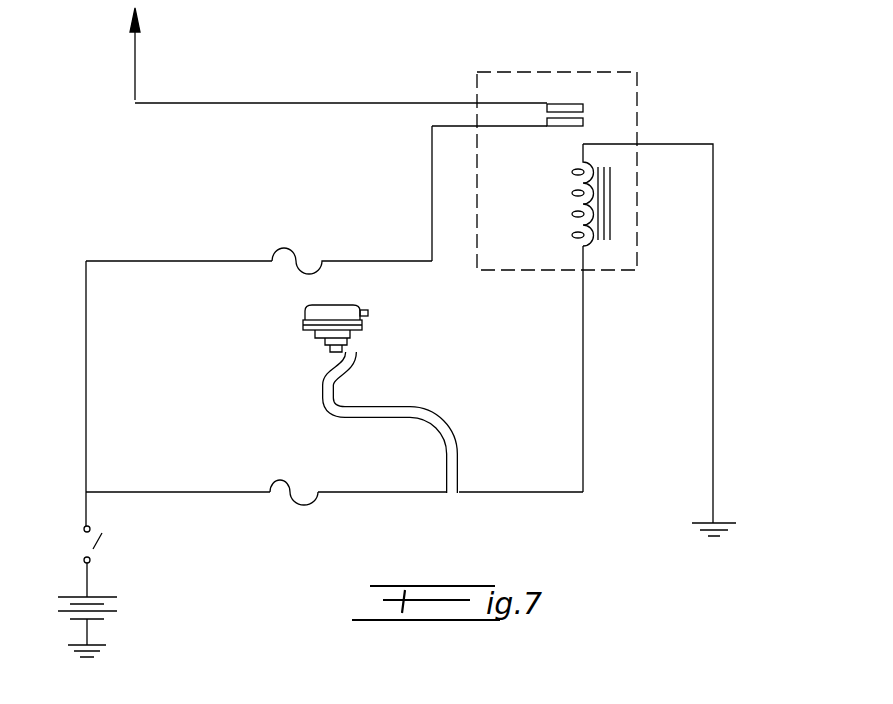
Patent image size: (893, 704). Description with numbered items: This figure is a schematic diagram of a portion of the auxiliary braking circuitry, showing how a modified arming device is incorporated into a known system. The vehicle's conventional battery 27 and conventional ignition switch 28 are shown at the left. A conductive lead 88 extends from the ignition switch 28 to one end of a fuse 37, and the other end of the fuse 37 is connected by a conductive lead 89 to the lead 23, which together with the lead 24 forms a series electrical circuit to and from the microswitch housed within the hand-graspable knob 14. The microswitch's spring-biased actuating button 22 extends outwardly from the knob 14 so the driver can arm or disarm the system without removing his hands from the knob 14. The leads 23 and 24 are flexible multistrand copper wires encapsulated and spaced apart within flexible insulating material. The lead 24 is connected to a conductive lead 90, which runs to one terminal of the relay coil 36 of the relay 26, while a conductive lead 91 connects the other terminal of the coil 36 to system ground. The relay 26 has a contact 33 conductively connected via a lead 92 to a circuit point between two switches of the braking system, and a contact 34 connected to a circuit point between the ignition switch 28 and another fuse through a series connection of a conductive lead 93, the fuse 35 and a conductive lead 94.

The hand-graspable knob 14 is at (305, 308).
The spring-biased actuating button 22 is at (368, 313).
The lead 23 is at (323, 402).
The lead 24 is at (334, 392).
The relay 26 is at (513, 68).
The battery 27 is at (112, 604).
The ignition switch 28 is at (100, 526).
The contact 33 is at (560, 104).
The contact 34 is at (583, 122).
The fuse 35 is at (293, 250).
The relay coil 36 is at (578, 210).
The fuse 37 is at (281, 497).
The conductive lead 88 is at (210, 492).
The conductive lead 89 is at (362, 492).
The conductive lead 90 is at (583, 390).
The conductive lead 91 is at (714, 295).
The lead 92 is at (340, 103).
The conductive lead 93 is at (432, 179).
The conductive lead 94 is at (162, 261).